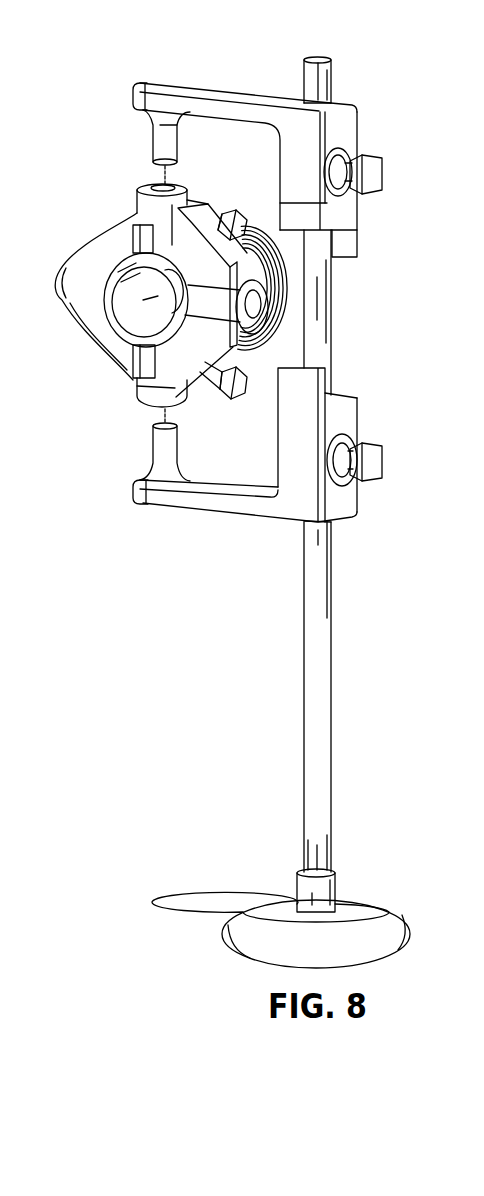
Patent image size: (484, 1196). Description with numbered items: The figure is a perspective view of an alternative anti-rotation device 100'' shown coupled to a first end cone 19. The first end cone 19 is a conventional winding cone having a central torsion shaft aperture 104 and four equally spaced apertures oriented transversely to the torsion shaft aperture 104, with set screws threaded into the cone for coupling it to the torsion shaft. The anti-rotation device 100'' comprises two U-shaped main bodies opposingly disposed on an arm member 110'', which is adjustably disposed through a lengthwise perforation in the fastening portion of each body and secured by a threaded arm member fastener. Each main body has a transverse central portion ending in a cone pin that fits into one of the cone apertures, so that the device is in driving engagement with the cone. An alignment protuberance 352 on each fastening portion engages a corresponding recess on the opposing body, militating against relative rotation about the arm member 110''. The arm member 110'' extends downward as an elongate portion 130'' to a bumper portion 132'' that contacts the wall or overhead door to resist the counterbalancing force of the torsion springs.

The anti-rotation device 100'' is at (252, 487).
The arm member 110'' is at (315, 512).
The pole 130'' is at (347, 484).
The bumper portion 132'' is at (315, 930).
The alignment protuberance 352 is at (310, 372).
The first end cone 19 is at (123, 357).
The torsion shaft aperture 104 is at (127, 313).